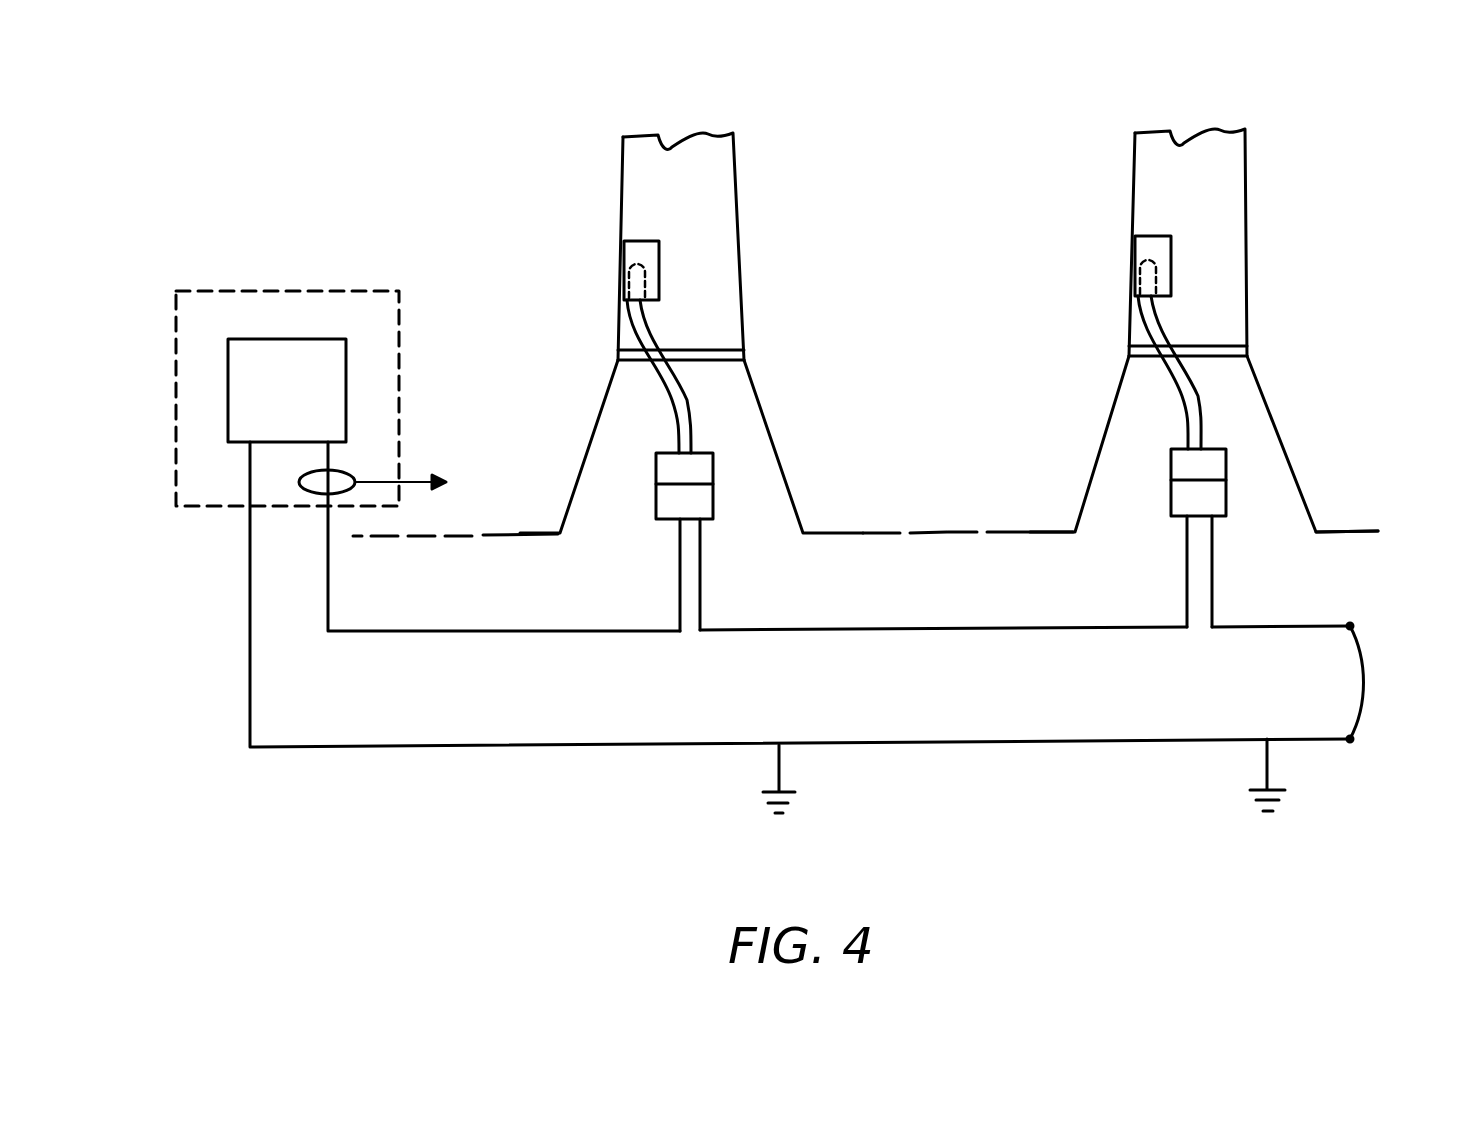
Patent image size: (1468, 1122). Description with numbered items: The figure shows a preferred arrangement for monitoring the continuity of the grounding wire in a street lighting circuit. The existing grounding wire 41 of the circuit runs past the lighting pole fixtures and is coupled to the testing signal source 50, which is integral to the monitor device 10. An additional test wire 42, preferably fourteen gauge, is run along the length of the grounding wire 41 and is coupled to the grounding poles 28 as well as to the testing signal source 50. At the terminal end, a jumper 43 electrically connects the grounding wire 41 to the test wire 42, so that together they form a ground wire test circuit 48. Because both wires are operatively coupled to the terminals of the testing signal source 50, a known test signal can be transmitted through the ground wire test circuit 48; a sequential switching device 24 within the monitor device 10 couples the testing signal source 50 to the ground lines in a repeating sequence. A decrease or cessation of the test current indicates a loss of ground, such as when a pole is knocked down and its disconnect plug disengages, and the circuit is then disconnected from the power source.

The monitor device 10 is at (260, 290).
The testing signal source 50 is at (295, 338).
The sequential switching device 24 is at (356, 478).
The grounding wire 41 is at (475, 630).
The test wire 42 is at (418, 742).
The jumper 43 is at (1358, 705).
The ground wire test circuit 48 is at (378, 776).
The grounding poles 28 is at (779, 768).